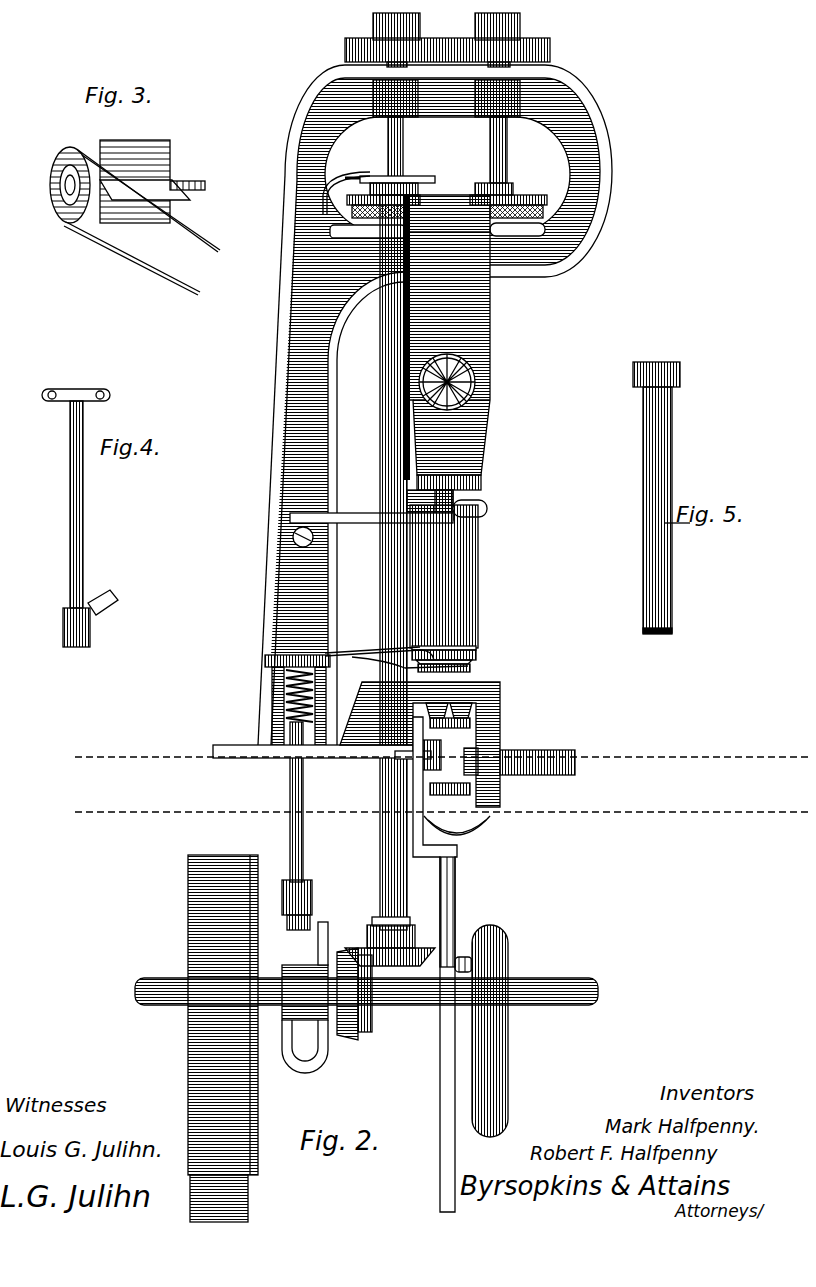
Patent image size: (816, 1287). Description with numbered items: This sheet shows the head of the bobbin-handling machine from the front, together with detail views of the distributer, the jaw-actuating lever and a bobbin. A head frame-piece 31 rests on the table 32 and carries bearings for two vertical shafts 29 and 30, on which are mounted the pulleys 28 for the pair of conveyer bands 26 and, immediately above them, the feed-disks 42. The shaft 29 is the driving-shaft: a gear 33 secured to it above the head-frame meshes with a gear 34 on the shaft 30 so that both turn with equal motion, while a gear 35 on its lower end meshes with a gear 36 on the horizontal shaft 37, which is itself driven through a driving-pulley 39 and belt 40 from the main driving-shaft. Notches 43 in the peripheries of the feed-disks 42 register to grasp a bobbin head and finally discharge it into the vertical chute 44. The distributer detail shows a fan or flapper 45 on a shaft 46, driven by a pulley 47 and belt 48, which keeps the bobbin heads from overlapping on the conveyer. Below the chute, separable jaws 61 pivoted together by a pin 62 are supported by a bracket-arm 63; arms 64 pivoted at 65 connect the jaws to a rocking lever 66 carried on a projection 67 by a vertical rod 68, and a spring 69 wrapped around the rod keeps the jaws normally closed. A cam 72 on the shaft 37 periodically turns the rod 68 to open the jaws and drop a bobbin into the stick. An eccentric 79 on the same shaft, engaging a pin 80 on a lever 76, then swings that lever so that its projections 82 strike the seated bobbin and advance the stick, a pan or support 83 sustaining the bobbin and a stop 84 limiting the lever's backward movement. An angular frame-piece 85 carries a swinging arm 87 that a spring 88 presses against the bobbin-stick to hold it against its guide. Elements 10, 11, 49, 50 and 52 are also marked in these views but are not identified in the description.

In FIG. 2, the block 10 is at (312, 890).
In FIG. 4, the block 10 is at (88, 605).
In FIG. 2, the lug 11 is at (296, 929).
In FIG. 4, the lug 11 is at (116, 603).
In FIG. 2, the bands 26 is at (543, 212).
In FIG. 2, the pulleys 28 is at (365, 236).
In FIG. 2, the vertical shaft 29 is at (404, 156).
In FIG. 2, the vertical shaft 30 is at (491, 156).
In FIG. 2, the head frame-piece 31 is at (612, 168).
In FIG. 2, the table 32 is at (442, 784).
In FIG. 2, the gear 33 is at (352, 40).
In FIG. 2, the gear 34 is at (540, 40).
In FIG. 2, the gear 35 is at (366, 944).
In FIG. 2, the gear 36 is at (348, 1033).
In FIG. 2, the shaft 37 is at (150, 1005).
In FIG. 2, the driving-pulley 39 is at (188, 1068).
In FIG. 2, the belt 40 is at (248, 1195).
In FIG. 2, the feed-disks 42 is at (420, 190).
In FIG. 2, the notches 43 is at (548, 198).
In FIG. 2, the vertical chute 44 is at (452, 235).
In FIG. 3, the fan or flapper 45 is at (170, 160).
In FIG. 3, the shaft 46 is at (205, 186).
In FIG. 3, the pulley 47 is at (52, 200).
In FIG. 3, the belt 48 is at (209, 250).
In FIG. 2, the spring wire 49 is at (330, 182).
In FIG. 2, the plate 50 is at (418, 180).
In FIG. 2, the pin 52 is at (358, 176).
In FIG. 2, the separable jaws 61 is at (478, 611).
In FIG. 2, the pin 62 is at (452, 565).
In FIG. 2, the bracket-arm 63 is at (355, 510).
In FIG. 2, the arms 64 is at (352, 654).
In FIG. 2, the pivots 65 is at (472, 648).
In FIG. 2, the rocking lever 66 is at (265, 662).
In FIG. 4, the rocking lever 66 is at (72, 389).
In FIG. 2, the projection 67 is at (327, 670).
In FIG. 2, the vertical rod 68 is at (303, 806).
In FIG. 4, the vertical rod 68 is at (83, 523).
In FIG. 2, the spring 69 is at (313, 716).
In FIG. 2, the cam 72 is at (316, 1072).
In FIG. 2, the lever 76 is at (456, 910).
In FIG. 2, the eccentric 79 is at (508, 1088).
In FIG. 2, the pin 80 is at (465, 957).
In FIG. 2, the projections 82 is at (472, 724).
In FIG. 2, the pan or support 83 is at (482, 830).
In FIG. 2, the stop 84 is at (395, 757).
In FIG. 2, the angular frame-piece 85 is at (500, 740).
In FIG. 2, the swinging arm 87 is at (480, 760).
In FIG. 2, the spring 88 is at (576, 768).